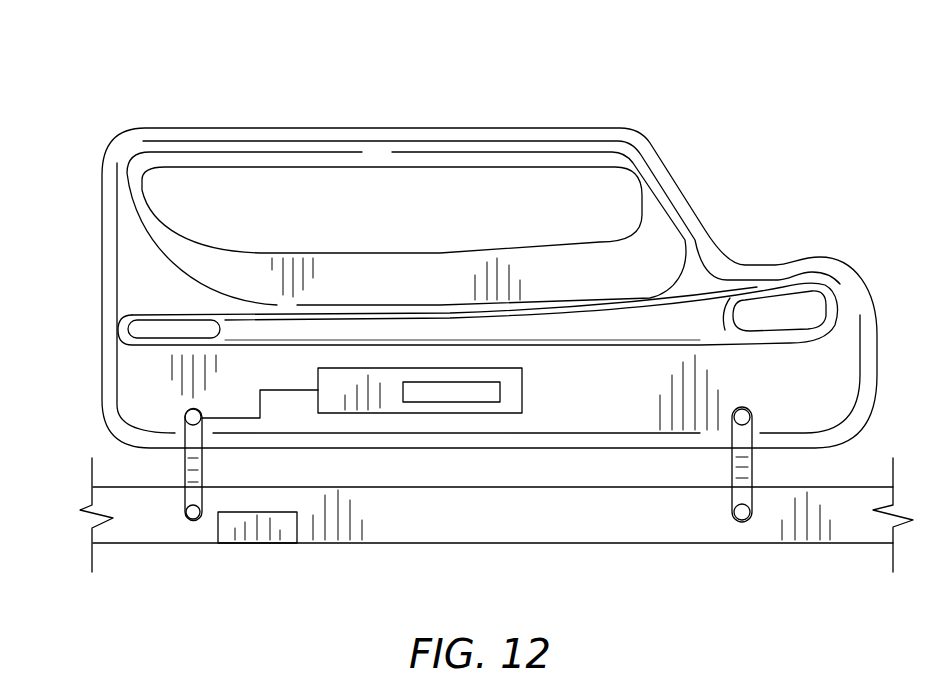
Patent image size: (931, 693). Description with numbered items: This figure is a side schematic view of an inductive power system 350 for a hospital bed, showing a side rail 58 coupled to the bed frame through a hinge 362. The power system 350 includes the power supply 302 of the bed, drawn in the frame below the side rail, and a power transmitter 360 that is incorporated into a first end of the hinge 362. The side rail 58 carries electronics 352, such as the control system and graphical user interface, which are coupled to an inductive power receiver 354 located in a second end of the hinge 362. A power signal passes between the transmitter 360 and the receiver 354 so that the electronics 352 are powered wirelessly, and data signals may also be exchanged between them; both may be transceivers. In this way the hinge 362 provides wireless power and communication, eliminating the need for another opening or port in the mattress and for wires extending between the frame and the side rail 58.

The inductive power system 350 is at (110, 100).
The left foot side rail 58 is at (310, 137).
The electronics 352 is at (512, 396).
The inductive power receiver 354 is at (185, 415).
The hinge 362 is at (752, 495).
The power transmitter 360 is at (193, 517).
The power supply 302 is at (275, 540).